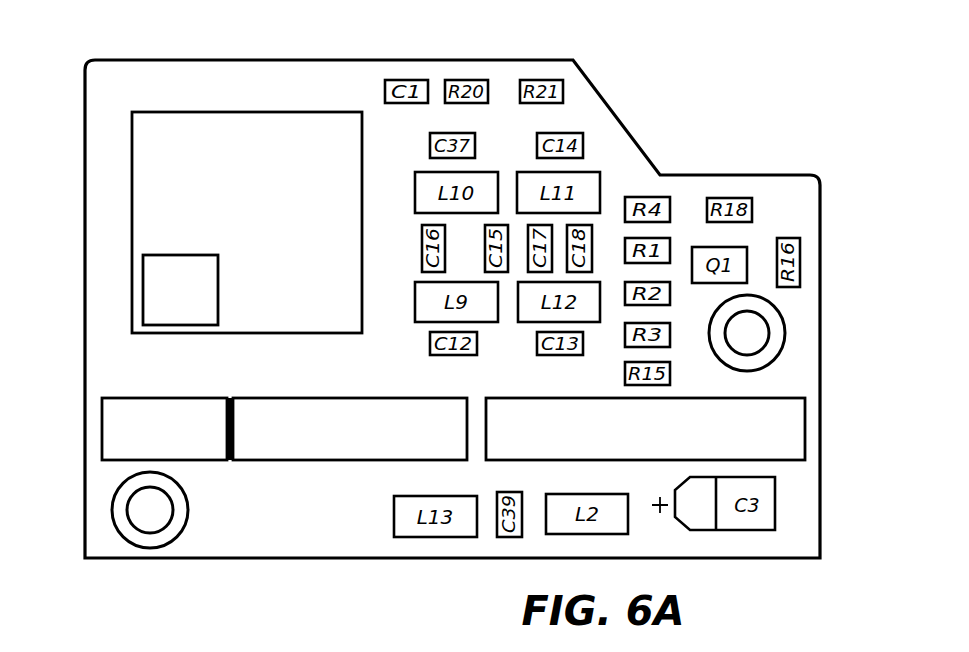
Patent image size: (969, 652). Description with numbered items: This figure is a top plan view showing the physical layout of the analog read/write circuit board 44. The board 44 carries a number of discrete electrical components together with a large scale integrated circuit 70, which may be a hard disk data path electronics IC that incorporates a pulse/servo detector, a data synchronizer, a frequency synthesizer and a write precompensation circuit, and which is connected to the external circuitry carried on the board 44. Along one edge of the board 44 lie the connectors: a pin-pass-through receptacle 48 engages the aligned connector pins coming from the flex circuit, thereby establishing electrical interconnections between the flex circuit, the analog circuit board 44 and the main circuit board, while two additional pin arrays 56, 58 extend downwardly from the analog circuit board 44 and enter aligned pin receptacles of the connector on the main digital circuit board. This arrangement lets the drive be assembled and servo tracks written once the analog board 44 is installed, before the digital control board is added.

The large scale integrated circuit 70 is at (218, 128).
The pin array 58 is at (112, 437).
The pin-pass-through receptacle 48 is at (287, 448).
The pin array 56 is at (793, 430).
The analog read/write circuit board 44 is at (808, 495).